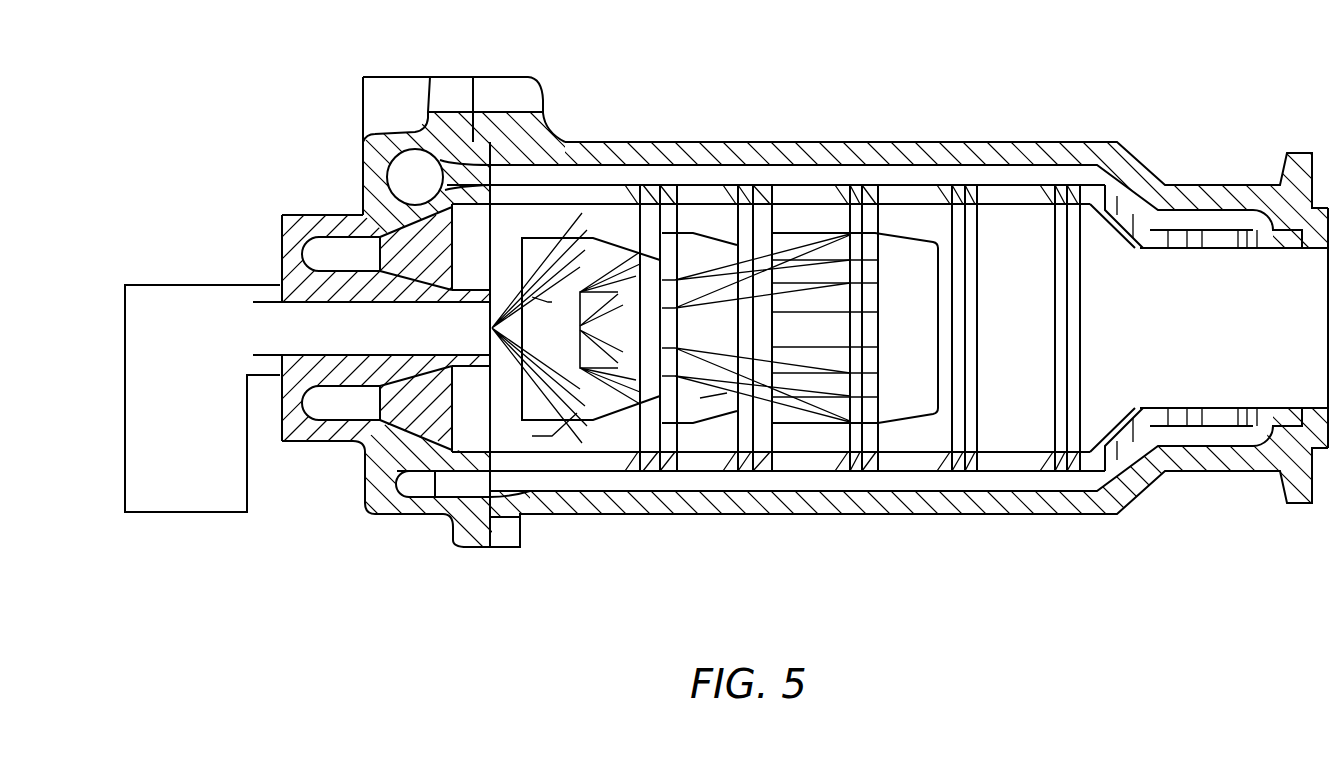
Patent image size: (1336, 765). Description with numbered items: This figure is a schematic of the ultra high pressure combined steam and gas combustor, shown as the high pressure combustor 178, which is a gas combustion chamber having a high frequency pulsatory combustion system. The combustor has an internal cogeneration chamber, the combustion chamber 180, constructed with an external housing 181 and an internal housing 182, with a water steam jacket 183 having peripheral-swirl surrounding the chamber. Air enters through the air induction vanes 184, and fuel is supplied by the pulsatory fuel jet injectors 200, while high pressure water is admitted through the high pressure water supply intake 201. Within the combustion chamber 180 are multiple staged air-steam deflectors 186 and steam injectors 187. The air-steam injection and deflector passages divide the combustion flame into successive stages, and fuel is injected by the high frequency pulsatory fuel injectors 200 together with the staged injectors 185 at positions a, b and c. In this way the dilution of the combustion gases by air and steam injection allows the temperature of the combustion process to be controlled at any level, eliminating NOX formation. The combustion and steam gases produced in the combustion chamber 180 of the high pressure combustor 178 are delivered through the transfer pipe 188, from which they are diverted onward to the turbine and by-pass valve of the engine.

The high pressure combustor 178 is at (1092, 133).
The combustion chamber 180 is at (947, 387).
The external housing 181 is at (634, 143).
The internal housing 182 is at (912, 262).
The water steam jacket 183 is at (693, 170).
The air induction vanes 184 is at (357, 215).
The staged injectors 185 is at (508, 395).
The air-steam deflectors 186 is at (715, 420).
The steam injectors 187 is at (855, 185).
The transfer pipe 188 is at (918, 187).
The pulsatory fuel jet injectors 200 is at (205, 500).
The high pressure water supply intake 201 is at (403, 175).